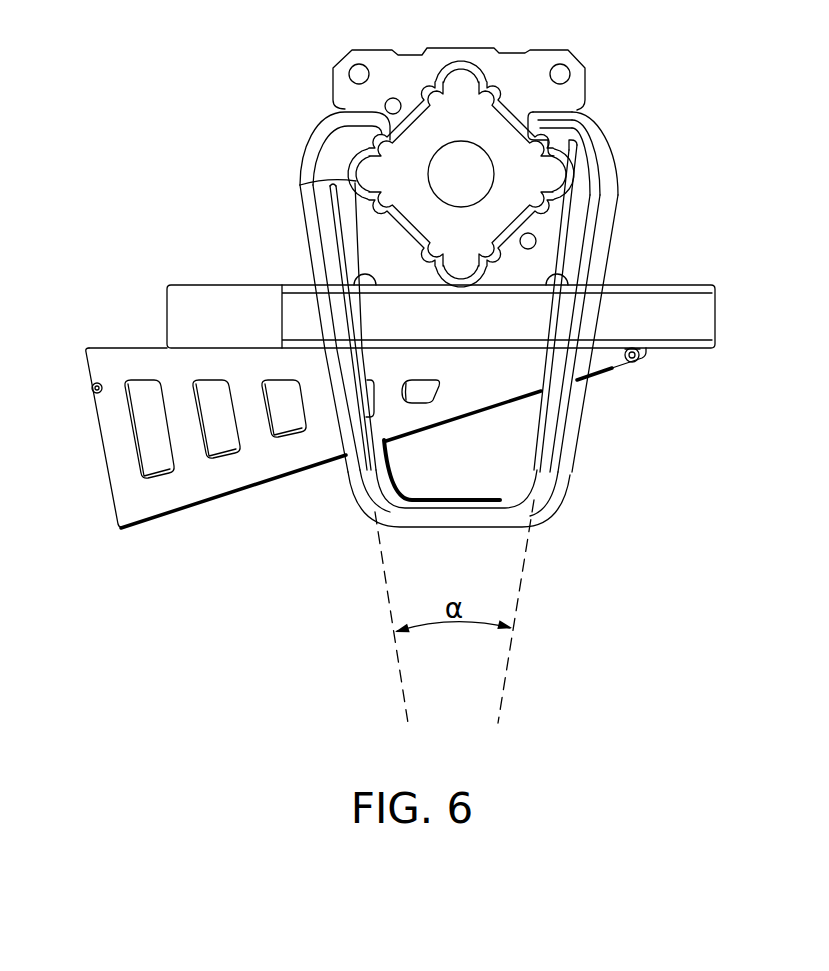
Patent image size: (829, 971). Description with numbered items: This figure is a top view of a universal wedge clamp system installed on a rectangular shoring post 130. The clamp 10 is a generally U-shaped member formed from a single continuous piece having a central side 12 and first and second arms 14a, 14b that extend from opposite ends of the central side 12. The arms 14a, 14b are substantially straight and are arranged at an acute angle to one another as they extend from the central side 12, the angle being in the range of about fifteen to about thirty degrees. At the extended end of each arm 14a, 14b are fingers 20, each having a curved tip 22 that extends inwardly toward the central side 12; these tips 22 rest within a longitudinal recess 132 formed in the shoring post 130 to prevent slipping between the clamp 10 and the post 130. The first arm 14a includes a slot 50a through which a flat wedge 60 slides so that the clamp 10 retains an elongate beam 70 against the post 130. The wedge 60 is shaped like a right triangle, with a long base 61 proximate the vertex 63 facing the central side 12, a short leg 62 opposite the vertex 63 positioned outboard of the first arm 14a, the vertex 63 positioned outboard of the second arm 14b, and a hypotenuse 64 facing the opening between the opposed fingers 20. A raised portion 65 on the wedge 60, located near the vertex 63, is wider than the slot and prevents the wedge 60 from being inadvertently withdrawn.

The clamp 10 is at (453, 314).
The central side 12 is at (418, 520).
The first arm 14a is at (299, 359).
The second arm 14b is at (577, 423).
The fingers 20 is at (330, 133).
The tip 22 is at (394, 100).
The shoring post 130 is at (510, 148).
The recess 132 is at (556, 160).
The first slot 50a is at (316, 241).
The wedge 60 is at (375, 432).
The base 61 is at (182, 510).
The short leg 62 is at (100, 450).
The vertex 63 is at (610, 364).
The hypotenuse 64 is at (137, 347).
The raised portion 65 is at (647, 355).
The elongate beam 70 is at (303, 313).